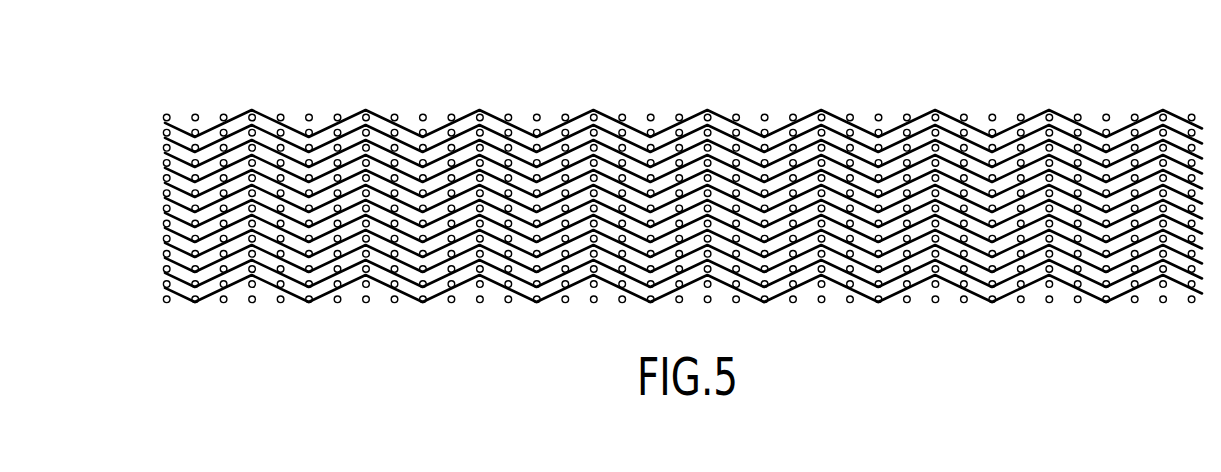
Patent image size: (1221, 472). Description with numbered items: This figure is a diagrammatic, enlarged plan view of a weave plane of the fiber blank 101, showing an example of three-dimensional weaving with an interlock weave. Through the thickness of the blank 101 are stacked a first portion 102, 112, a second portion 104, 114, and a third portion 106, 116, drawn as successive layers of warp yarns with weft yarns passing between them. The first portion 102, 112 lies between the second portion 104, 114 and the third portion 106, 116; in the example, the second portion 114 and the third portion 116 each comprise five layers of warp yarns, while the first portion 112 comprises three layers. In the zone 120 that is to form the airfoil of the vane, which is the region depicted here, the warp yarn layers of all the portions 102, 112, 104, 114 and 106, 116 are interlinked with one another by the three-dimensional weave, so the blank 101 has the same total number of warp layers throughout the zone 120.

The blank 101 is at (635, 185).
The first portion 102 is at (635, 213).
The first portion 112 is at (158, 184).
The second portion 104 is at (635, 153).
The second portion 114 is at (158, 113).
The third portion 106 is at (635, 266).
The third portion 116 is at (158, 234).
The zone 120 is at (495, 207).